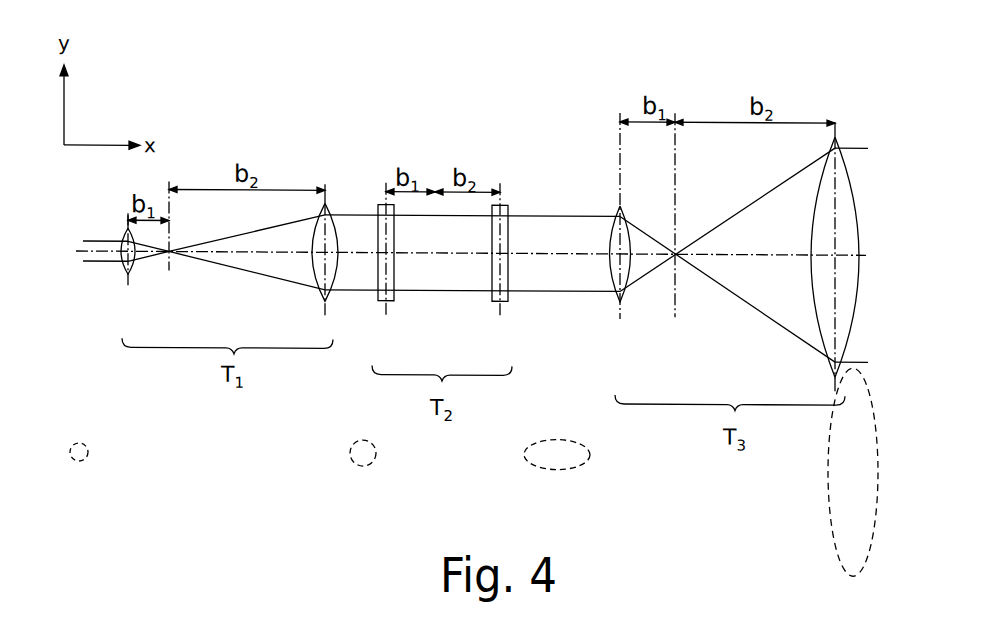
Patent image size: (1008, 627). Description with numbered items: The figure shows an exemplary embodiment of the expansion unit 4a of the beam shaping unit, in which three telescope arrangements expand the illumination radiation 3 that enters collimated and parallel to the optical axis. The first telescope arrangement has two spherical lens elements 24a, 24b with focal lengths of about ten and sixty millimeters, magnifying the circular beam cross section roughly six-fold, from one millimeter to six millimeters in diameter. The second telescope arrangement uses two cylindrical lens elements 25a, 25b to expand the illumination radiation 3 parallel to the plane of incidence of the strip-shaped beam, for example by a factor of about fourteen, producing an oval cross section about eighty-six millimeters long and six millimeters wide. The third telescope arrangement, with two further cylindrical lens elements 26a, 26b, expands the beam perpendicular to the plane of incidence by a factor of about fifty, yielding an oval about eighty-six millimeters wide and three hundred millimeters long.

The illumination radiation 3 is at (93, 266).
The expansion unit 4a is at (212, 128).
The spherical lens element 24a is at (132, 274).
The spherical lens element 24b is at (318, 289).
The cylindrical lens element 25a is at (380, 297).
The cylindrical lens element 25b is at (497, 297).
The cylindrical lens element 26a is at (611, 297).
The cylindrical lens element 26b is at (822, 318).